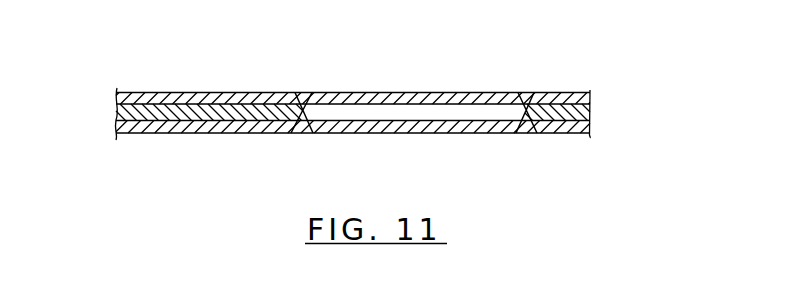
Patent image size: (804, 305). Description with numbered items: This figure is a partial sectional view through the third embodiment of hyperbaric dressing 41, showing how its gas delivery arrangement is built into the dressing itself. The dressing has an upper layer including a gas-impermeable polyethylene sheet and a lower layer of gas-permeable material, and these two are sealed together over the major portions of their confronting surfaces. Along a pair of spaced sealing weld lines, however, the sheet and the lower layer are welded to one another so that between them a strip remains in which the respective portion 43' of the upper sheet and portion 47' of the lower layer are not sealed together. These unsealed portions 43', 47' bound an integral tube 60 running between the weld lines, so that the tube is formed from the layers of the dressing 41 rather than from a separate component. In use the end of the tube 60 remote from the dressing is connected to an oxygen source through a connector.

The hyperbaric dressing 41 is at (106, 108).
The portion of the sheet 43' is at (406, 68).
The portion of the lower layer 47' is at (405, 162).
The integral tube 60 is at (427, 110).